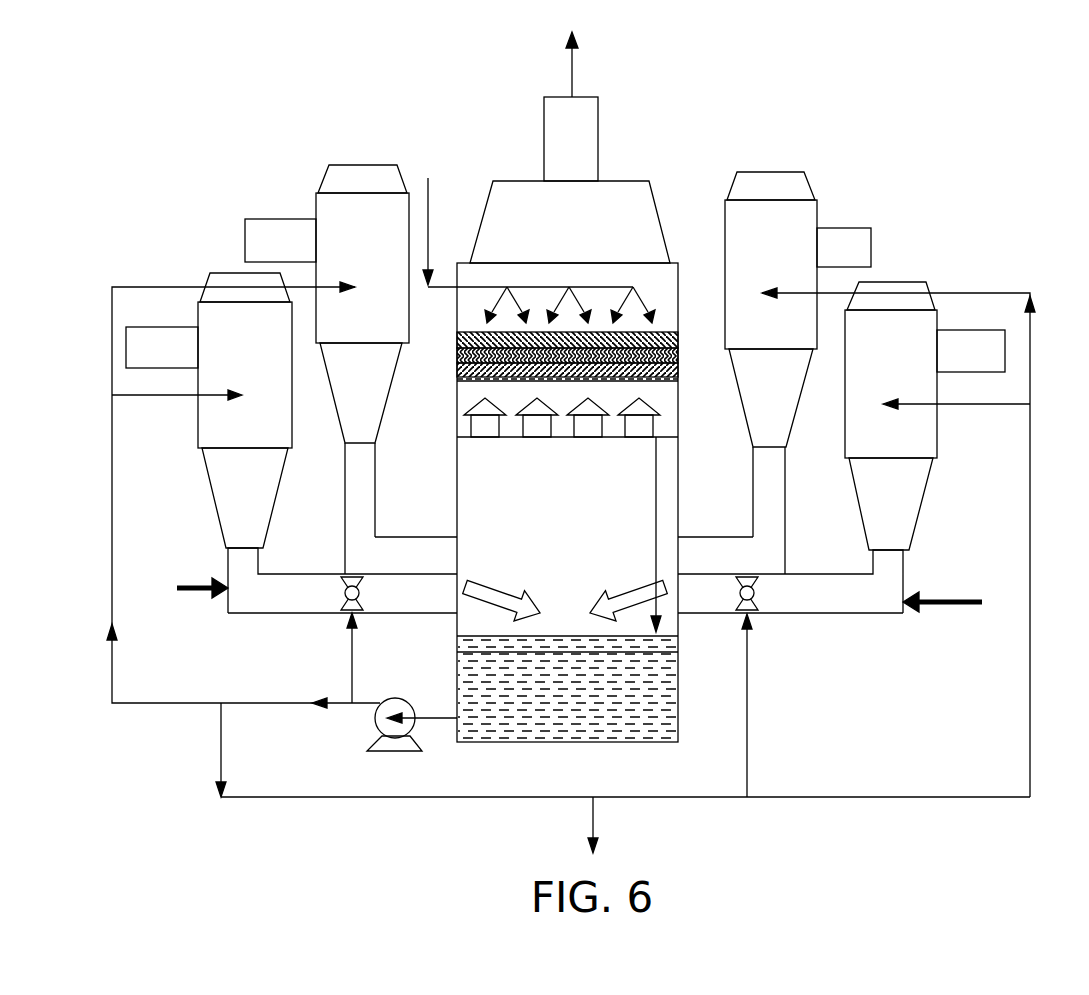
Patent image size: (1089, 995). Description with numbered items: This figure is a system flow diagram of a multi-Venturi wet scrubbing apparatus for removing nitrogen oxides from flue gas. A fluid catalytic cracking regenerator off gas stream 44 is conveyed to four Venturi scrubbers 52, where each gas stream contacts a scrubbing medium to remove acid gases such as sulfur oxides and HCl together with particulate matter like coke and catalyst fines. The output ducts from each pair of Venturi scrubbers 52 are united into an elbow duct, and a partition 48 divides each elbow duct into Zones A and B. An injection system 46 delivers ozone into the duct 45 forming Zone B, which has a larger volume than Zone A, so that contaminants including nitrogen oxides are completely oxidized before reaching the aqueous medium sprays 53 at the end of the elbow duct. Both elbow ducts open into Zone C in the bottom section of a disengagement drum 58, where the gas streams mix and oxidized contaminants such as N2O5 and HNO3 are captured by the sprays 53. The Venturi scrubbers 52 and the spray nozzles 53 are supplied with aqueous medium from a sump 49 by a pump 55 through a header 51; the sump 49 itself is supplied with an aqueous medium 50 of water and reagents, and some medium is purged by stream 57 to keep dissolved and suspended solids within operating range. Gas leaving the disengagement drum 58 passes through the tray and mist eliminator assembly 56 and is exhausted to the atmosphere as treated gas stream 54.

The FCC regenerator off gas stream 44 is at (150, 342).
The duct 45 is at (252, 624).
The injection system 46 is at (200, 580).
The partition 48 is at (418, 558).
The sump 49 is at (645, 712).
The aqueous medium 50 is at (645, 667).
The header 51 is at (256, 716).
The Venturi scrubber 52 is at (565, 357).
The aqueous medium sprays 53 is at (377, 610).
The treated gas stream 54 is at (572, 72).
The pump 55 is at (420, 697).
The mist eliminator 56 is at (452, 354).
The purge stream 57 is at (593, 822).
The disengagement drum 58 is at (564, 419).